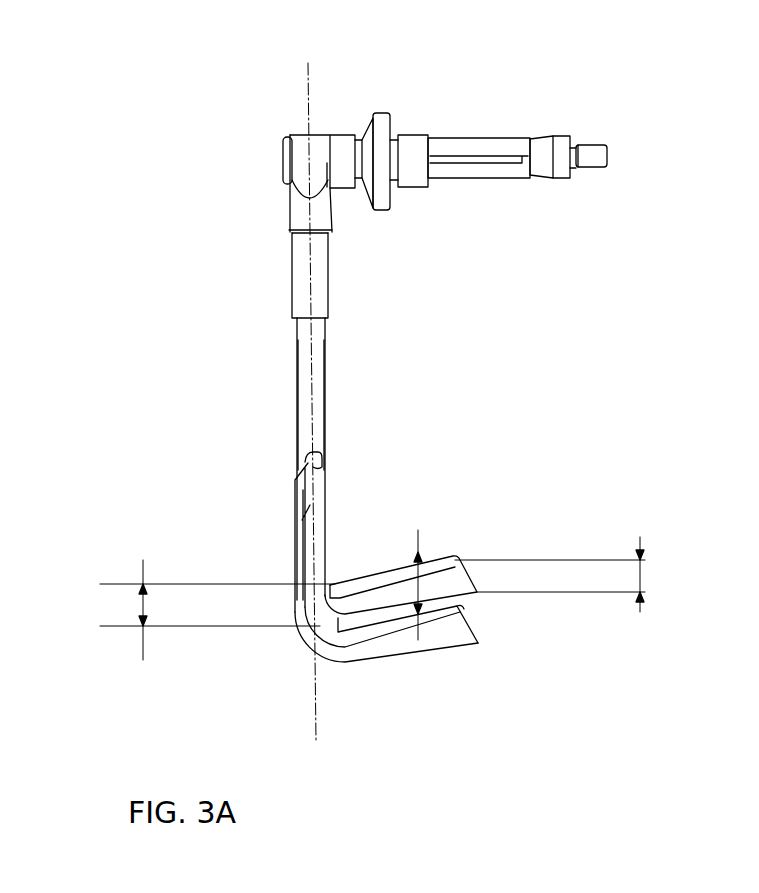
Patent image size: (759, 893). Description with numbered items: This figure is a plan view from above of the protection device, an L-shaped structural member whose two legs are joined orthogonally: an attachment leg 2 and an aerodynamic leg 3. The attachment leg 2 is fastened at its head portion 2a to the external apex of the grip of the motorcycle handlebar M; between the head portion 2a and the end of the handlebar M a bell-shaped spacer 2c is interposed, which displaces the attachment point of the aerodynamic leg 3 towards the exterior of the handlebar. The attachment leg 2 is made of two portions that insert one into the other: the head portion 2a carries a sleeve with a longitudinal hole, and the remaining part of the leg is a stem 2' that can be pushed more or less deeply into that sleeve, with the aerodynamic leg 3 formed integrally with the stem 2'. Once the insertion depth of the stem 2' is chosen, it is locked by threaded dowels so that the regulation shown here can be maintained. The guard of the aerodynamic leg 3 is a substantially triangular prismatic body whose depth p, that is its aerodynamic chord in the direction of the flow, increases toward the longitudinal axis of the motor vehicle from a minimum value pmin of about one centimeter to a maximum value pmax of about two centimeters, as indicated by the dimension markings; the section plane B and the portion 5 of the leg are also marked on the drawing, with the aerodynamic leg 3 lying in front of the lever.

The attachment leg 2 is at (259, 367).
The head portion 2a is at (300, 220).
The spacer 2c is at (388, 112).
The stem 2' is at (260, 405).
The aerodynamic leg 3 is at (435, 687).
The blade portion 5 is at (480, 602).
The motorcycle handlebar M is at (498, 193).
The section plane B is at (299, 69).
The depth p is at (420, 577).
The minimum depth value pmin is at (217, 610).
The maximum depth value pmax is at (603, 574).